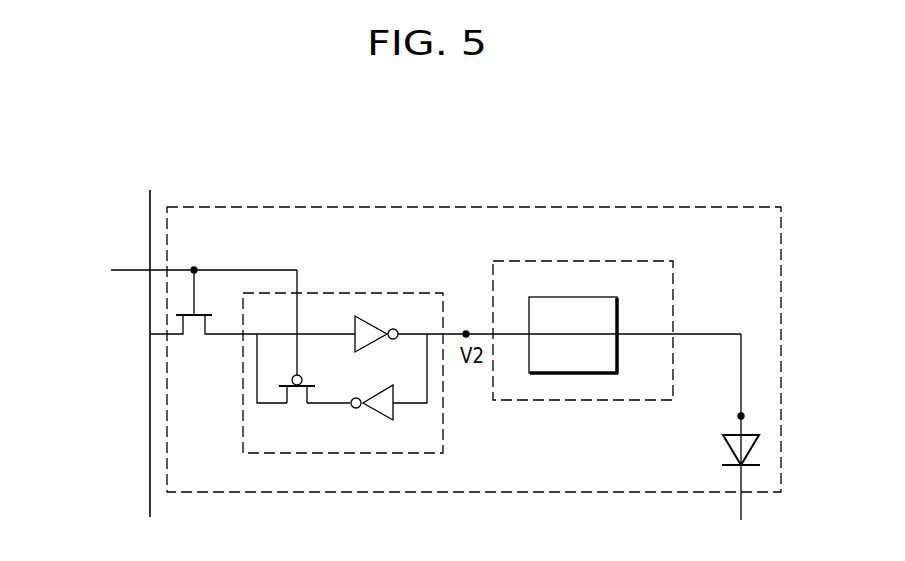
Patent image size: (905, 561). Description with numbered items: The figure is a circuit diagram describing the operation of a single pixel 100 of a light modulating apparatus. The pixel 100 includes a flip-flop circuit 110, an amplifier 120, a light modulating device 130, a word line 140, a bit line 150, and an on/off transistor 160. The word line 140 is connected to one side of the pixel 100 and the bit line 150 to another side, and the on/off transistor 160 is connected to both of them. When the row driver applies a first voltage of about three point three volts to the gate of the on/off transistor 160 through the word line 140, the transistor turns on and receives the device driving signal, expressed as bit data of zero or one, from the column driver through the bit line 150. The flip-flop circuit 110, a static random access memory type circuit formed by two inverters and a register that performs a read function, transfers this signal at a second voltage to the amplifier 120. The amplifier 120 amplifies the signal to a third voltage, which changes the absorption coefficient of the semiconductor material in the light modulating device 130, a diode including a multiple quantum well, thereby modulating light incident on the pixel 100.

The pixel 100 is at (498, 205).
The flip-flop circuit 110 is at (360, 292).
The amplifier 120 is at (605, 259).
The light modulating device 130 is at (760, 452).
The word line 140 is at (137, 272).
The bit line 150 is at (149, 231).
The on/off transistor 160 is at (207, 305).